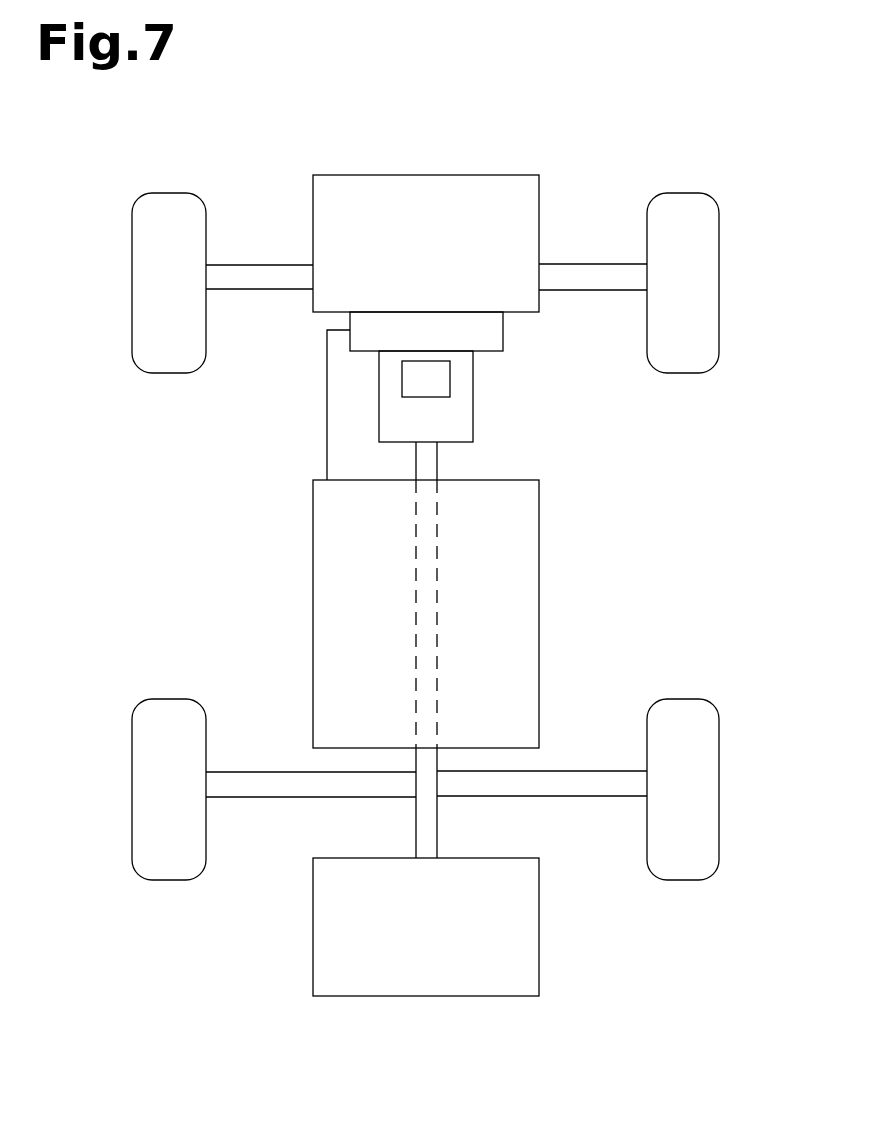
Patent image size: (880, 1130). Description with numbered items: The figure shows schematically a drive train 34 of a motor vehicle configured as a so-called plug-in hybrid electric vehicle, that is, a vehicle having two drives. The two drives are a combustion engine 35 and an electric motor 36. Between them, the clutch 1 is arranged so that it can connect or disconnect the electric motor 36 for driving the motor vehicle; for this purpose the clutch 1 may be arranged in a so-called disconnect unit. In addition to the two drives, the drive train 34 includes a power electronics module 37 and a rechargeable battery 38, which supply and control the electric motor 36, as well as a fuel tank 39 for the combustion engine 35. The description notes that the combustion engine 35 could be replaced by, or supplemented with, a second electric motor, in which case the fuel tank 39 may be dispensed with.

The clutch 1 is at (390, 397).
The drive train 34 is at (593, 583).
The combustion engine 35 is at (573, 170).
The electric motor 36 is at (493, 387).
The power electronics module 37 is at (435, 310).
The rechargeable battery 38 is at (557, 682).
The fuel tank 39 is at (580, 940).